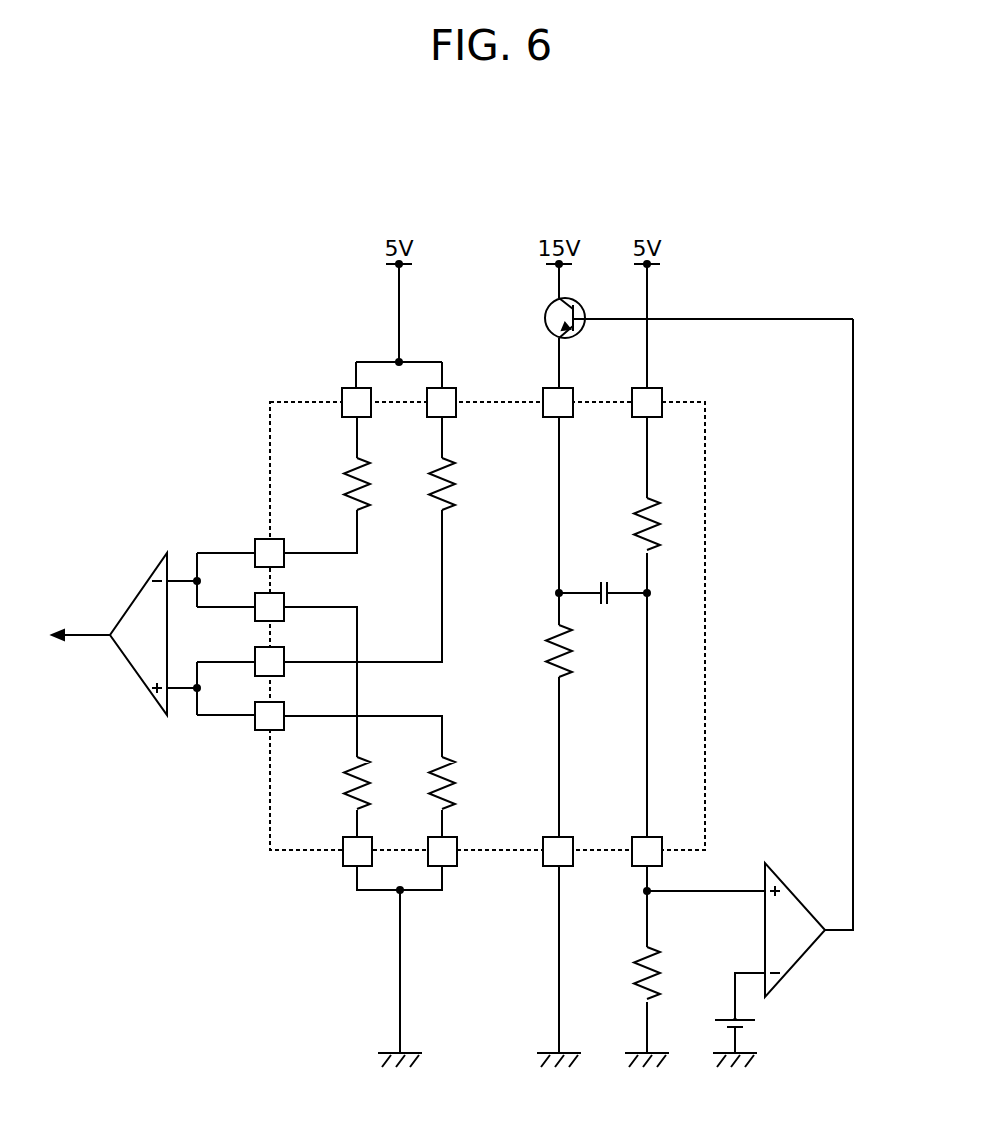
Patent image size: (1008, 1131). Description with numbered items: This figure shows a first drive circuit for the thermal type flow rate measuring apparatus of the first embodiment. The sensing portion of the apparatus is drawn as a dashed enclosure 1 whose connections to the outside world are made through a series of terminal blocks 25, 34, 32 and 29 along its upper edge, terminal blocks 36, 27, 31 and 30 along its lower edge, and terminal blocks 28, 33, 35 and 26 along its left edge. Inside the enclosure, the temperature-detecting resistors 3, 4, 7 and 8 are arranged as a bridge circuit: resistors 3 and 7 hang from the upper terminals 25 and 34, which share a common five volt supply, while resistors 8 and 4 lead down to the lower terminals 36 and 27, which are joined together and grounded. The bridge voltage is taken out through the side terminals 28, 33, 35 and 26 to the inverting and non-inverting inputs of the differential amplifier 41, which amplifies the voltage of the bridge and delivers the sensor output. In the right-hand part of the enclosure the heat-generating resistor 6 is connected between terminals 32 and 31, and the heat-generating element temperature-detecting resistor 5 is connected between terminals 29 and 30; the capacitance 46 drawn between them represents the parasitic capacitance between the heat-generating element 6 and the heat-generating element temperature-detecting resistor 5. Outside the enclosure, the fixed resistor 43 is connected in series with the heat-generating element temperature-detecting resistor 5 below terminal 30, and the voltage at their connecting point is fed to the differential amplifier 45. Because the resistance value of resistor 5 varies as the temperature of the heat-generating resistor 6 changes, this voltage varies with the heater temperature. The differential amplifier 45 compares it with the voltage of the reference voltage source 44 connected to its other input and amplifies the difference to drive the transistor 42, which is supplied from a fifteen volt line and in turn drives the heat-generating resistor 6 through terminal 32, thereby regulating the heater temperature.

The sensor unit 1 is at (270, 402).
The temperature-detecting resistor 3 is at (348, 488).
The temperature-detecting resistor 4 is at (434, 787).
The heat-generating element temperature-detecting resistor 5 is at (638, 528).
The heat-generating resistor 6 is at (550, 650).
The temperature-detecting resistor 7 is at (434, 488).
The temperature-detecting resistor 8 is at (348, 787).
The terminal 25 is at (342, 395).
The terminal 26 is at (284, 710).
The terminal 27 is at (452, 866).
The terminal 28 is at (257, 548).
The terminal 29 is at (662, 396).
The terminal 30 is at (632, 866).
The terminal 31 is at (552, 866).
The terminal 32 is at (574, 396).
The terminal 33 is at (256, 600).
The terminal 34 is at (456, 396).
The terminal 35 is at (256, 652).
The terminal 36 is at (350, 866).
The differential amplifier 41 is at (138, 594).
The transistor 42 is at (546, 306).
The fixed resistor 43 is at (634, 978).
The reference voltage source 44 is at (752, 1026).
The differential amplifier 45 is at (790, 966).
The capacitance 46 is at (605, 606).